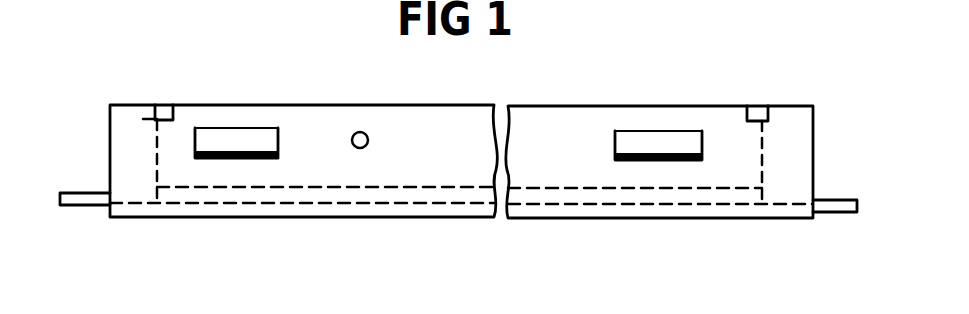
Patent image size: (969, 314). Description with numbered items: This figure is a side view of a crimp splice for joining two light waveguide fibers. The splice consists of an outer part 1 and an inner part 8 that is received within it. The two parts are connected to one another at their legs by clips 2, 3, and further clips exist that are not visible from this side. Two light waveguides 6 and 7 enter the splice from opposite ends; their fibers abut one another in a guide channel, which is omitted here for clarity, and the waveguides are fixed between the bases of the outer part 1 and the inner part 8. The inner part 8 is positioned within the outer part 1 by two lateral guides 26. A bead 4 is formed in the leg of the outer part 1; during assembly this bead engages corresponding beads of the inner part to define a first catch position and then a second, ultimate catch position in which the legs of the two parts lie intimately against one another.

The outer part 1 is at (781, 173).
The clip 2 is at (240, 147).
The clip 3 is at (653, 143).
The bead 4 is at (359, 131).
The light waveguide 6 is at (89, 206).
The light waveguide 7 is at (830, 213).
The inner part 8 is at (424, 162).
The lateral guide 26 is at (148, 115).